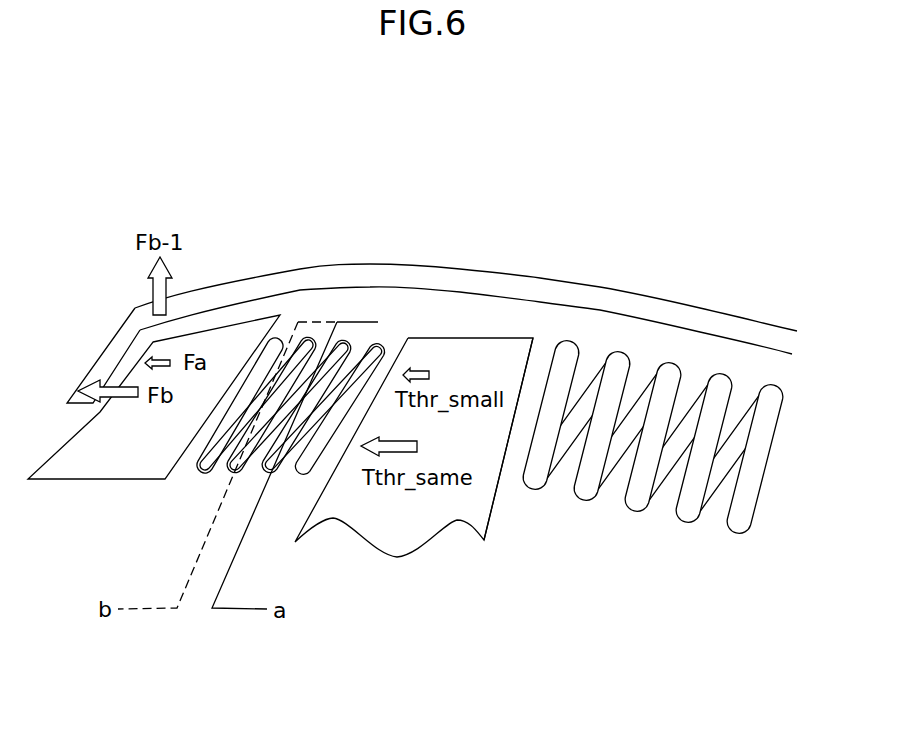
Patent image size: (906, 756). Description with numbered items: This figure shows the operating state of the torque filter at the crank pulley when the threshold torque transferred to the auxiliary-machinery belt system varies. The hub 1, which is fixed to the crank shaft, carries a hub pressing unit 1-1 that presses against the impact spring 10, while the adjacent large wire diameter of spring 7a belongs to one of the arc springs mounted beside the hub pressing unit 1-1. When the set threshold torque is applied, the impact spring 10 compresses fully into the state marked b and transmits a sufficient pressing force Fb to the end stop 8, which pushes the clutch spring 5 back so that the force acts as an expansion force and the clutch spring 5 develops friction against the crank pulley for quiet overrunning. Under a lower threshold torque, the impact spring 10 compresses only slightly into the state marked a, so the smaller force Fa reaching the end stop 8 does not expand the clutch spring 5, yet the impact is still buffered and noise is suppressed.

The hub 1 is at (424, 421).
The hub pressing unit 1-1 is at (472, 337).
The clutch spring 5 is at (332, 265).
The large wire diameter of spring 7a is at (672, 357).
The end stop 8 is at (113, 465).
The impact spring 10 is at (377, 345).